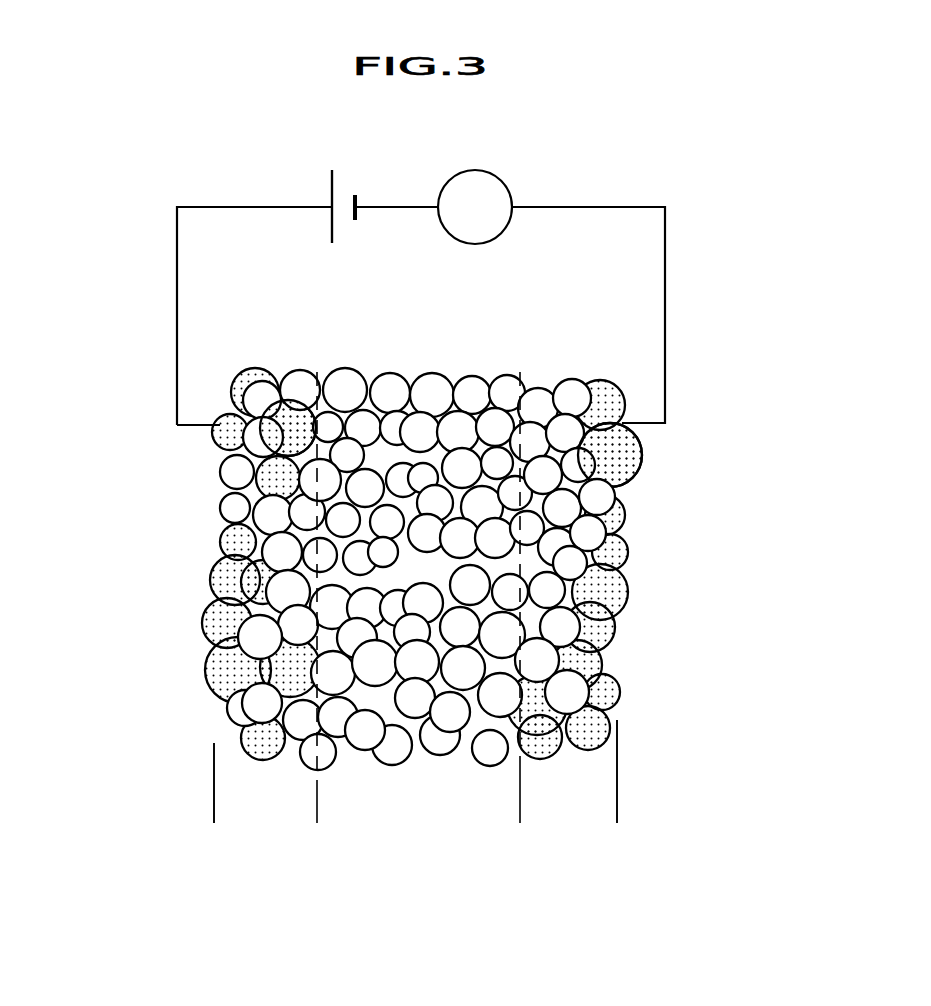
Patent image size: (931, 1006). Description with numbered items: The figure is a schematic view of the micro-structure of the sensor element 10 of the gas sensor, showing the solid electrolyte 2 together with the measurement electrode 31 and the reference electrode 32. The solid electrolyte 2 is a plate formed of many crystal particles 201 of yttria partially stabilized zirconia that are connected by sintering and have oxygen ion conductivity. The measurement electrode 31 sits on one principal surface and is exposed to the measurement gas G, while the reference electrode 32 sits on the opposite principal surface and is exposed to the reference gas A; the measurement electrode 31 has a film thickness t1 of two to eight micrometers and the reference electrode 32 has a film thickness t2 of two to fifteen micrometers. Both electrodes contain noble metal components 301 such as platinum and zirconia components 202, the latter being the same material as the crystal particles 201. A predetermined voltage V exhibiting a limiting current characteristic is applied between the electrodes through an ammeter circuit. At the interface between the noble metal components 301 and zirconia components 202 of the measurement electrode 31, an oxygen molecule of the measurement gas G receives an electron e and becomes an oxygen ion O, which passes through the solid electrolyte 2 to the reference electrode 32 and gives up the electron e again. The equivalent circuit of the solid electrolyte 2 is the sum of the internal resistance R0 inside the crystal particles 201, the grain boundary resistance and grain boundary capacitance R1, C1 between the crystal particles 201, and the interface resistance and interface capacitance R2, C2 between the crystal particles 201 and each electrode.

The sensor element 10 is at (657, 764).
The solid electrolyte 2 is at (410, 664).
The measurement electrode 31 is at (637, 705).
The reference electrode 32 is at (213, 718).
The noble metal components 301 is at (225, 537).
The zirconia components 202 is at (262, 628).
The crystal particles 201 is at (397, 752).
The internal resistance R0 is at (363, 733).
The first interface resistance and capacitance R1, C1 is at (465, 735).
The second interface resistance and capacitance R2, C2 is at (320, 480).
The film thickness t1 is at (607, 810).
The film thickness t2 is at (308, 810).
The predetermined voltage V is at (332, 185).
The reference gas A is at (475, 207).
The measurement gas G is at (645, 645).
The electron e is at (627, 187).
The oxygen ion O is at (440, 340).